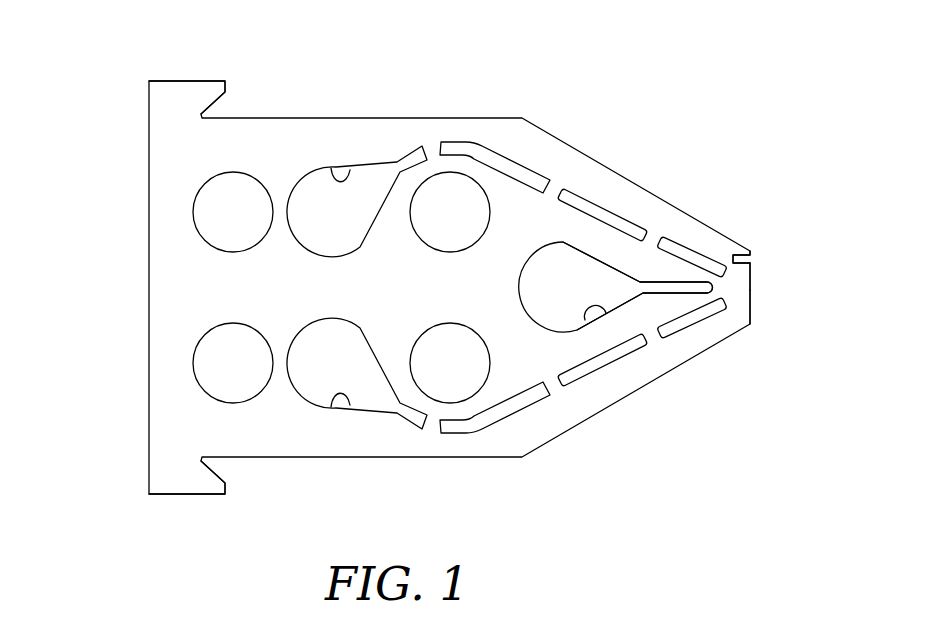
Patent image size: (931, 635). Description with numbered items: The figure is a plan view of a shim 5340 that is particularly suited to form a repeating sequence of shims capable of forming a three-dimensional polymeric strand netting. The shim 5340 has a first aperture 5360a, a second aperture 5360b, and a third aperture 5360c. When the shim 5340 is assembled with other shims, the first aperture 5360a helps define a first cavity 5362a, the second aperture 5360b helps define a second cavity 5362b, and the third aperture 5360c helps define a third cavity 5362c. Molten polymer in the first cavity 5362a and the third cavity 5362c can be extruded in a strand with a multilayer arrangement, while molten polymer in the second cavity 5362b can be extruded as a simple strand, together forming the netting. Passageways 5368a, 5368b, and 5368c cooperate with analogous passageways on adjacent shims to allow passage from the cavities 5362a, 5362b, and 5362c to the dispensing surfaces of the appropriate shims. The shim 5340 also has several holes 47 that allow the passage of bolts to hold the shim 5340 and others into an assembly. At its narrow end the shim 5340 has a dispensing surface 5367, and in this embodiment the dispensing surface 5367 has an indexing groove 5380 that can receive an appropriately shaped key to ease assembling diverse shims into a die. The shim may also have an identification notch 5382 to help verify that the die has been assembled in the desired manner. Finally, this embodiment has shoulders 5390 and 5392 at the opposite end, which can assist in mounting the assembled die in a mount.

The shim 5340 is at (545, 60).
The shoulder 5390 is at (214, 104).
The shoulder 5392 is at (214, 472).
The indexing groove 5380 is at (750, 255).
The identification notch 5382 is at (753, 272).
The dispensing surface 5367 is at (752, 302).
The first cavity 5362a is at (317, 209).
The second cavity 5362b is at (307, 358).
The third cavity 5362c is at (570, 262).
The holes 47 is at (213, 347).
The first aperture 5360a is at (350, 170).
The second aperture 5360b is at (349, 406).
The third aperture 5360c is at (600, 311).
The passageway 5368a is at (625, 228).
The passageway 5368b is at (580, 368).
The passageway 5368c is at (677, 295).